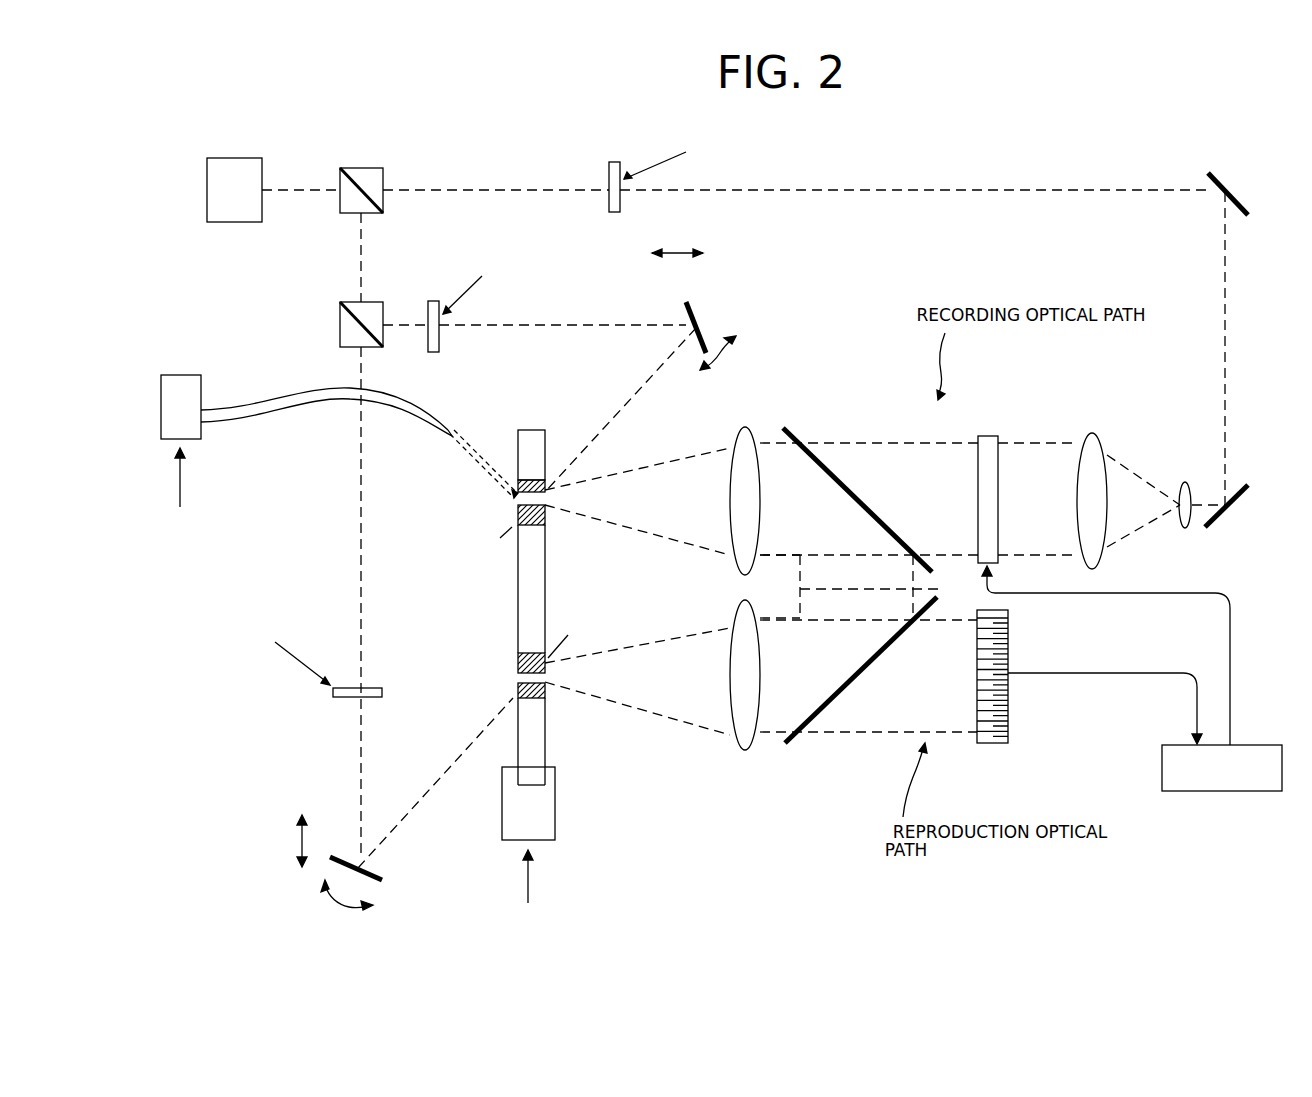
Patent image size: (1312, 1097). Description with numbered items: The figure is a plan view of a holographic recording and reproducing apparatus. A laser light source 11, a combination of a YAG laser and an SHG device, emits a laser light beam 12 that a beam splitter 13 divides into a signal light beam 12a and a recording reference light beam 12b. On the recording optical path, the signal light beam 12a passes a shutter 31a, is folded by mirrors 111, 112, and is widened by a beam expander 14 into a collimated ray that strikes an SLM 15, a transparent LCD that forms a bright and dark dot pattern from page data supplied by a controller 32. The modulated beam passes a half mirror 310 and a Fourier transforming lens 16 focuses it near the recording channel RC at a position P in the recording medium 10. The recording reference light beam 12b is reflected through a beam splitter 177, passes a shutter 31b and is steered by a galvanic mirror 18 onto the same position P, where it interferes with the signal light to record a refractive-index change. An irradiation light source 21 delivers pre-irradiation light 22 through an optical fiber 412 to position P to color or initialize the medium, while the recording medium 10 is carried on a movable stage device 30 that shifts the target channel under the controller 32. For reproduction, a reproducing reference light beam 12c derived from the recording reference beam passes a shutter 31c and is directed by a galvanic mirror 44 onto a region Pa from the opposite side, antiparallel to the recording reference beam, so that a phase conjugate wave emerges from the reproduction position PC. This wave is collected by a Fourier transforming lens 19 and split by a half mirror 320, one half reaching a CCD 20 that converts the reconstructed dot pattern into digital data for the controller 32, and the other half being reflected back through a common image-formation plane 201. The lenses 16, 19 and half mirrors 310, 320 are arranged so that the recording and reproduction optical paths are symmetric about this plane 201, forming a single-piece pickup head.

The laser light source 11 is at (233, 158).
The laser light beam 12 is at (314, 180).
The beam splitter 13 is at (364, 168).
The signal light beam 12a is at (503, 190).
The shutter 31a is at (611, 162).
The mirror 111 is at (1232, 184).
The mirror 112 is at (1234, 484).
The recording reference light beam 12b is at (363, 244).
The beam splitter 177 is at (340, 322).
The shutter 31b is at (440, 346).
The galvanic mirror 18 is at (690, 306).
The irradiation light source 21 is at (186, 375).
The optical fiber 412 is at (300, 410).
The pre-irradiation light 22 is at (465, 453).
The recording medium 10 is at (535, 431).
The recording channel RC is at (517, 512).
The recording position P is at (545, 505).
The reproduction position PC is at (516, 660).
The reproduction region Pa is at (545, 680).
The n-axis movable stage device 30 is at (556, 817).
The Fourier transforming lens 16 is at (745, 427).
The half mirror 310 is at (793, 428).
The common image-formation plane 201 is at (798, 589).
The Fourier transforming lens 19 is at (745, 750).
The half mirror 320 is at (797, 745).
The SLM 15 is at (988, 436).
The beam expander 14 is at (1097, 416).
The CCD 20 is at (1007, 724).
The controller 32 is at (1254, 793).
The galvanic mirror 44 is at (383, 880).
The reproducing reference light beam 12c is at (438, 776).
The shutter 31c is at (338, 697).